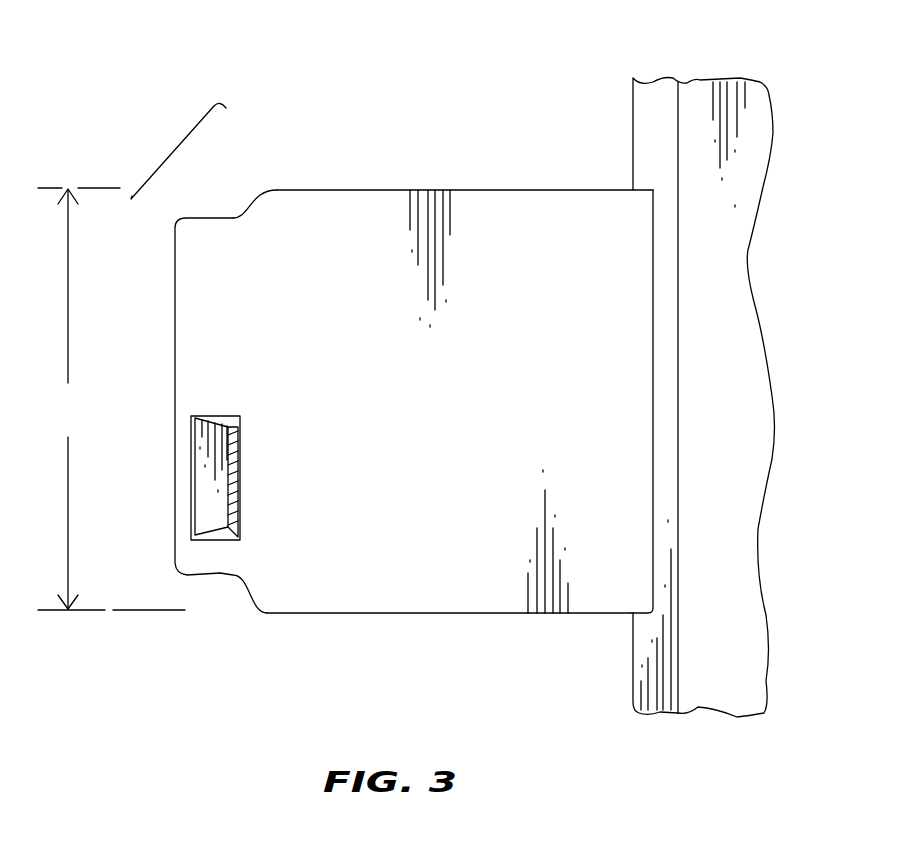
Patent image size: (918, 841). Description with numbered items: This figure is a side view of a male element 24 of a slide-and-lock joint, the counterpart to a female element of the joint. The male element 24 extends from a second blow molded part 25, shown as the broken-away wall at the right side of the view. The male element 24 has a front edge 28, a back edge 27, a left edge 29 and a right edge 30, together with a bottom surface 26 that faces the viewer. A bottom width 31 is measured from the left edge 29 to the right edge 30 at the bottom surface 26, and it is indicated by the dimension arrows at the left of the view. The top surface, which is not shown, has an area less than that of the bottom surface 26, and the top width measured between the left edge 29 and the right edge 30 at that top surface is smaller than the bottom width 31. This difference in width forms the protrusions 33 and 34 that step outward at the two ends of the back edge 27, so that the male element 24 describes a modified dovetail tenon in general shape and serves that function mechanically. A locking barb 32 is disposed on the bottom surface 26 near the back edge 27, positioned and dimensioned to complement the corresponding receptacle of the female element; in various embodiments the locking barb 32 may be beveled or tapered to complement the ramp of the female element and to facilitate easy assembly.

The male element 24 is at (172, 140).
The second blow molded part 25 is at (700, 118).
The bottom surface 26 is at (382, 401).
The back edge 27 is at (175, 367).
The front edge 28 is at (652, 520).
The left edge 29 is at (560, 189).
The right edge 30 is at (500, 613).
The bottom width 31 is at (111, 399).
The locking barb 32 is at (220, 463).
The protrusion 33 is at (292, 172).
The protrusion 34 is at (297, 637).